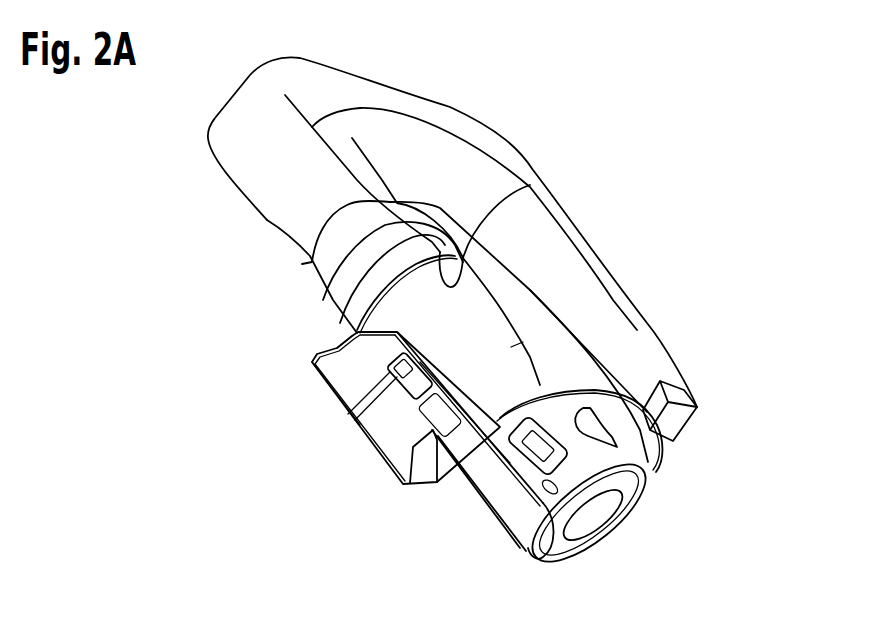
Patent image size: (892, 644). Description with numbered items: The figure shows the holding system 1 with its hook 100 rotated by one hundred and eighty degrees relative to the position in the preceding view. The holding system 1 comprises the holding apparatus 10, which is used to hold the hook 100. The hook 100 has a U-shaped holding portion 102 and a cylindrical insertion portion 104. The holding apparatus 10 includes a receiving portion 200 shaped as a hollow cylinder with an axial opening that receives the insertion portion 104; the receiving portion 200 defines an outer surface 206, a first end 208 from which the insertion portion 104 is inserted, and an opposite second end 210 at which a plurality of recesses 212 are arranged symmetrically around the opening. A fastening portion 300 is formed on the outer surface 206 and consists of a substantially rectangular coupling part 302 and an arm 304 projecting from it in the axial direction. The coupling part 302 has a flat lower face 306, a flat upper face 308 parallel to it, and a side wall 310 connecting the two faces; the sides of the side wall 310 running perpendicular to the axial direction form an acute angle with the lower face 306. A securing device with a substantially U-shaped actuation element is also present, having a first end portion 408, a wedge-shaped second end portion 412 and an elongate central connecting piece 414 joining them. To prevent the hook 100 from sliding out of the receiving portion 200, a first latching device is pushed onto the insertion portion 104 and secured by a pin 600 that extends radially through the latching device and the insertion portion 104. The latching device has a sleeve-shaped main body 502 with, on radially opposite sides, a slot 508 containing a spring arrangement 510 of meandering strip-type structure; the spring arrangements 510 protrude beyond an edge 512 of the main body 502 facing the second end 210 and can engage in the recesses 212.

The holding system 1 is at (150, 272).
The holding apparatus 10 is at (305, 336).
The hook 100 is at (642, 287).
The U-shaped holding portion 102 is at (376, 105).
The cylindrical insertion portion 104 is at (590, 517).
The receiving portion 200 is at (587, 374).
The outer surface 206 is at (513, 347).
The first end 208 is at (458, 282).
The second end 210 is at (537, 415).
The recesses 212 is at (697, 401).
The fastening portion 300 is at (352, 456).
The coupling part 302 is at (334, 373).
The arm 304 is at (525, 553).
The lower face 306 is at (323, 410).
The upper face 308 is at (300, 262).
The side wall 310 is at (393, 440).
The first end portion 408 is at (528, 507).
The second end portion 412 is at (362, 407).
The central connecting piece 414 is at (448, 478).
The main body 502 is at (617, 457).
The slot 508 is at (600, 470).
The spring arrangement 510 is at (593, 517).
The edge 512 is at (531, 398).
The pin 600 is at (605, 428).